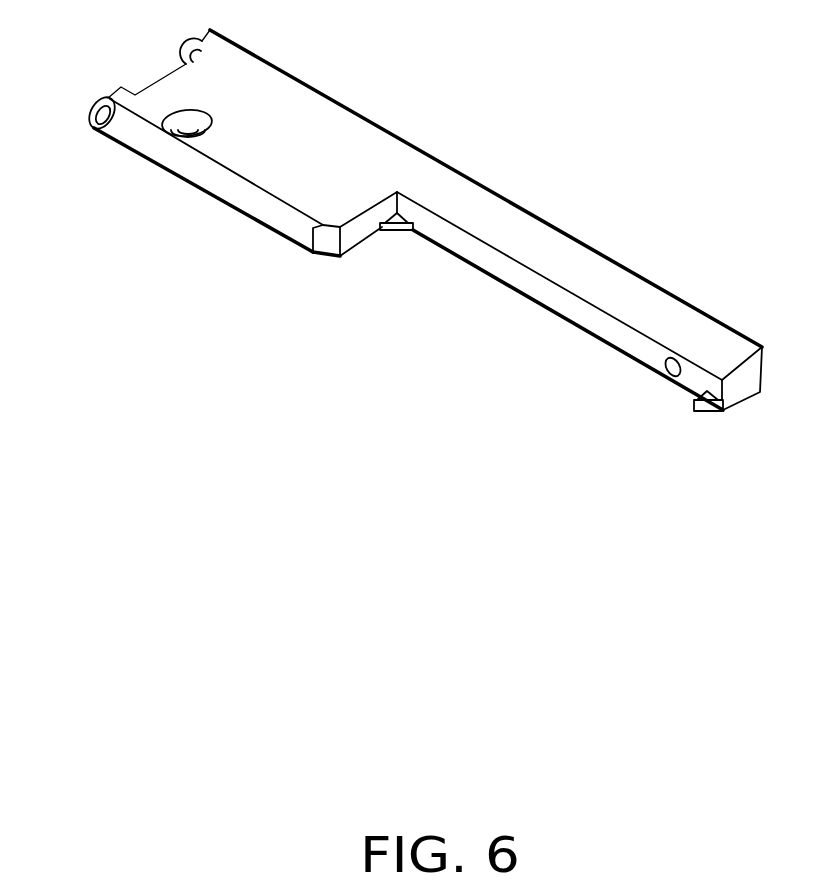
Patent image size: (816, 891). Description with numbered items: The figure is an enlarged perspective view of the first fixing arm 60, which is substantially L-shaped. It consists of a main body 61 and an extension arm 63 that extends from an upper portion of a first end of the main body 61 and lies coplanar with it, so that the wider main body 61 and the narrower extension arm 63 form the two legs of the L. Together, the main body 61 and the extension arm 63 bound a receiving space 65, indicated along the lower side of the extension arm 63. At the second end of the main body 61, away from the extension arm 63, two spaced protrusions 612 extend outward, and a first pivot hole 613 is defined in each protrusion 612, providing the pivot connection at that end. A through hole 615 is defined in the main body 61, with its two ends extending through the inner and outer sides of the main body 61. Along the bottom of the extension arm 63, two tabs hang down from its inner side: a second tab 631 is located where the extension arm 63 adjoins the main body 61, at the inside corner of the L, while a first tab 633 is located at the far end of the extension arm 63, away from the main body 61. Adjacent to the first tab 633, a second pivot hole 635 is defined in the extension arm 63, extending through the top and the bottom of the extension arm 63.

The first fixing arm 60 is at (433, 128).
The main body 61 is at (270, 93).
The protrusions 612 is at (114, 91).
The first pivot hole 613 is at (91, 117).
The through hole 615 is at (178, 138).
The extension arm 63 is at (547, 242).
The second tab 631 is at (397, 218).
The first tab 633 is at (708, 406).
The second pivot hole 635 is at (665, 364).
The receiving space 65 is at (489, 294).